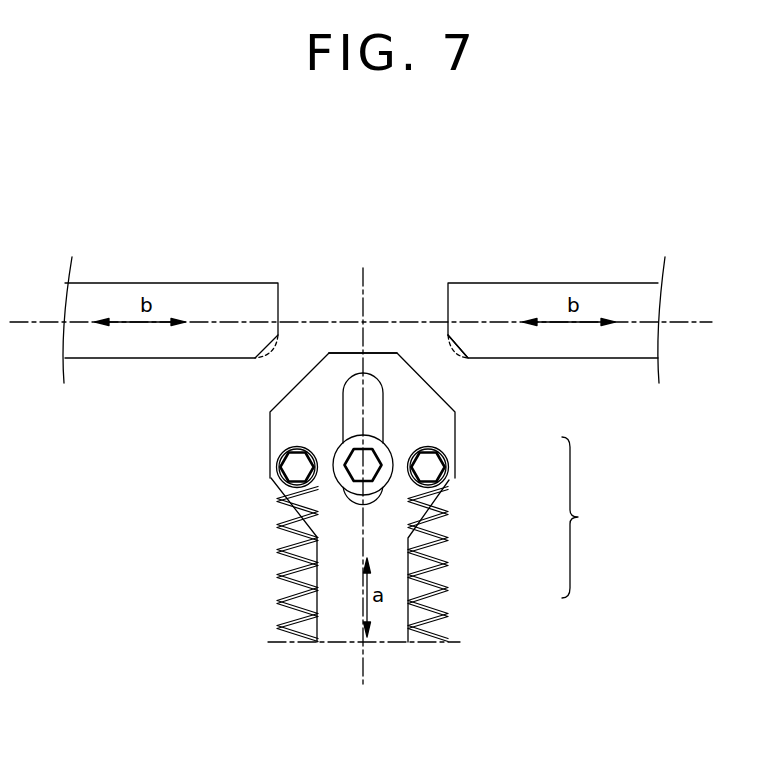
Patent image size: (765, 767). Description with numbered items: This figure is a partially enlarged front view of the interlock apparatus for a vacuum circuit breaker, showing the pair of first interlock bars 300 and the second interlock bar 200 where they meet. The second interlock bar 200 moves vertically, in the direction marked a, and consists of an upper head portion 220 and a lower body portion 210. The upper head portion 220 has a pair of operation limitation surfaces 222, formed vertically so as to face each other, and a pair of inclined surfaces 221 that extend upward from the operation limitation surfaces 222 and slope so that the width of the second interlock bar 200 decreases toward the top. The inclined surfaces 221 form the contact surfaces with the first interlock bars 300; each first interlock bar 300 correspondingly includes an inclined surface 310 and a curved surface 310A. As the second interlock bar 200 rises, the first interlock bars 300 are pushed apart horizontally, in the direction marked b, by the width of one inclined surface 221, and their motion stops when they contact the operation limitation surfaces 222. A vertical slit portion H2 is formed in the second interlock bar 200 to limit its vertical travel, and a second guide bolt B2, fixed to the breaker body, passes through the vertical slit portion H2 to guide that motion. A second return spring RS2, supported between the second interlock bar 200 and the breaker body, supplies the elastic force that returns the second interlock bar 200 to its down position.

The second interlock bar 200 is at (588, 517).
The lower body portion 210 is at (395, 590).
The upper head portion 220 is at (427, 438).
The inclined surface 221 is at (320, 352).
The operation limitation surface 222 is at (276, 451).
The first interlock bar 300 is at (531, 290).
The inclined surface 310 is at (466, 343).
The curved surface 310A is at (445, 347).
The vertical slit portion H2 is at (350, 397).
The second guide bolt B2 is at (347, 482).
The second return spring RS2 is at (283, 627).